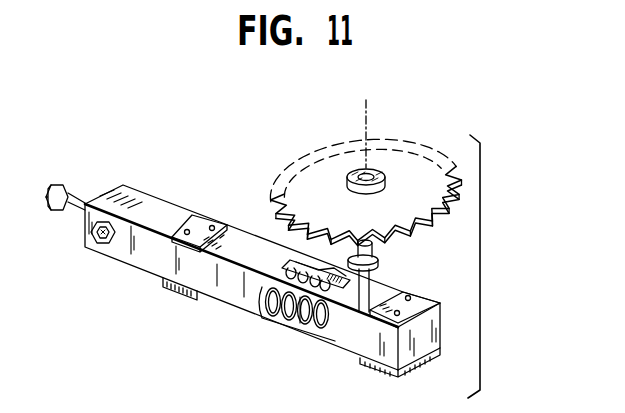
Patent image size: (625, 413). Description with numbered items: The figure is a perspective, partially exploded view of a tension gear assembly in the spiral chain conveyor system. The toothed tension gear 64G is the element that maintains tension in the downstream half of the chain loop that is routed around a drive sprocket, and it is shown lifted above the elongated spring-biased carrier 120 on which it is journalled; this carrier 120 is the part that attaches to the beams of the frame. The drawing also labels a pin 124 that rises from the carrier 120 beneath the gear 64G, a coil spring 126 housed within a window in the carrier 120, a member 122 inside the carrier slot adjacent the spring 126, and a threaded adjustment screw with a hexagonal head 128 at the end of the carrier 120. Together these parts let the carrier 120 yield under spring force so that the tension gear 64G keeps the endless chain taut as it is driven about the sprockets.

The spring-biased carrier 120 is at (152, 208).
The pawl 122 is at (350, 290).
The pin 124 is at (372, 283).
The spring 126 is at (283, 316).
The adjustment screw 128 is at (54, 186).
The tension gear 64G is at (400, 162).